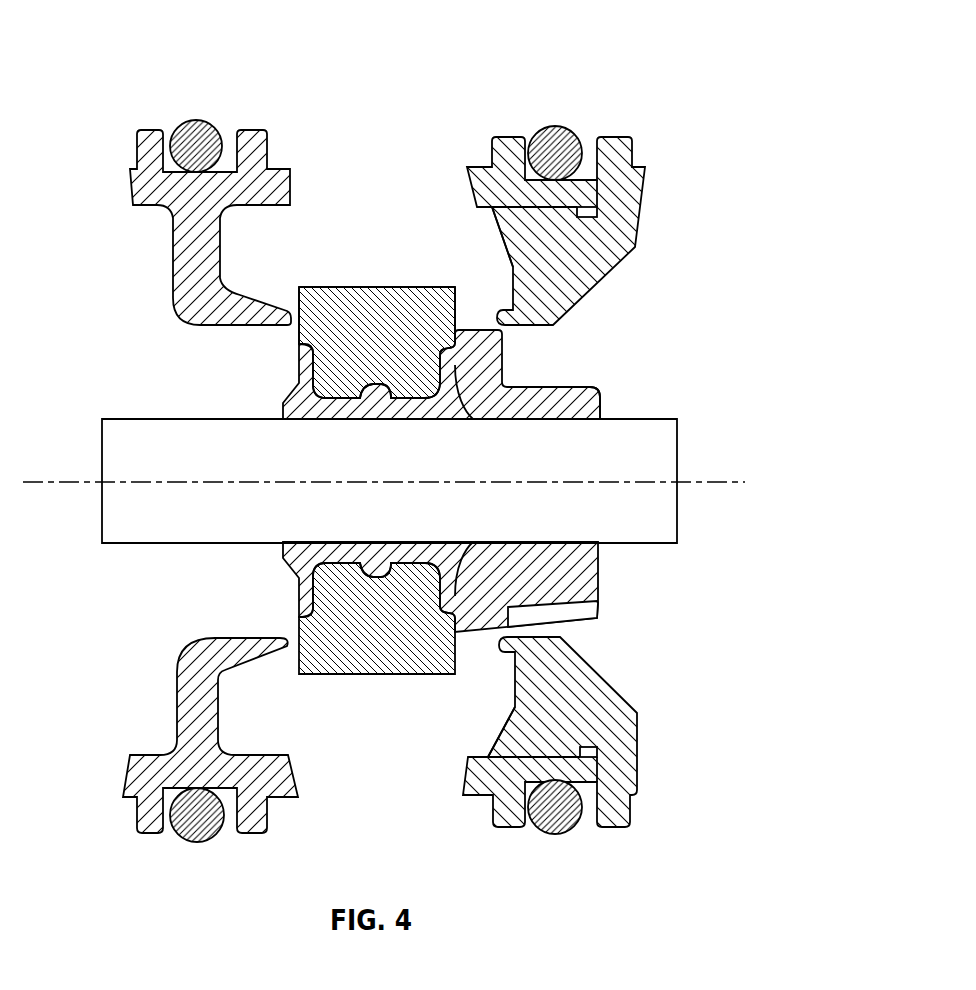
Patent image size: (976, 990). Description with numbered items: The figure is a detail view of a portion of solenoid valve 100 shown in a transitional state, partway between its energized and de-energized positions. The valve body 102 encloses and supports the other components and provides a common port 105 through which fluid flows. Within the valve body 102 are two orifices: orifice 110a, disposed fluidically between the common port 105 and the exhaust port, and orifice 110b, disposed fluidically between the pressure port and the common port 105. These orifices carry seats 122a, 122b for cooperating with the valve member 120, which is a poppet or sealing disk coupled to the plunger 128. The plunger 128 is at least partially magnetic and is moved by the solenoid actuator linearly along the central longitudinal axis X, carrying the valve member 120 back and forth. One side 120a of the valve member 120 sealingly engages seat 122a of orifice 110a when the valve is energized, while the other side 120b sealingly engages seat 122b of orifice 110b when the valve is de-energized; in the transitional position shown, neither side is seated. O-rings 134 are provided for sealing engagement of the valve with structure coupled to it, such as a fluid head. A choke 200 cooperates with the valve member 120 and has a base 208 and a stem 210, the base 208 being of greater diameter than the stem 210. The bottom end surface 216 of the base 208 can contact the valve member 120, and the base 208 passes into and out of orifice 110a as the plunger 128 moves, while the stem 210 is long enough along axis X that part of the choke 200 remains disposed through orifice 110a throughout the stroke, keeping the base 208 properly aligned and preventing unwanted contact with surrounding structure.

The solenoid valve 100 is at (675, 33).
The valve body 102 is at (128, 185).
The common port 105 is at (350, 150).
The orifice 110a is at (552, 328).
The orifice 110b is at (256, 330).
The valve member 120 is at (351, 286).
The side of valve member 120a is at (455, 302).
The side of valve member 120b is at (287, 639).
The seat 122a is at (497, 650).
The seat 122b is at (297, 313).
The plunger 128 is at (677, 460).
The O-ring 134 is at (185, 125).
The choke 200 is at (600, 608).
The base 208 is at (503, 353).
The stem 210 is at (600, 410).
The end surface 216 is at (487, 613).
The central longitudinal axis X is at (688, 483).